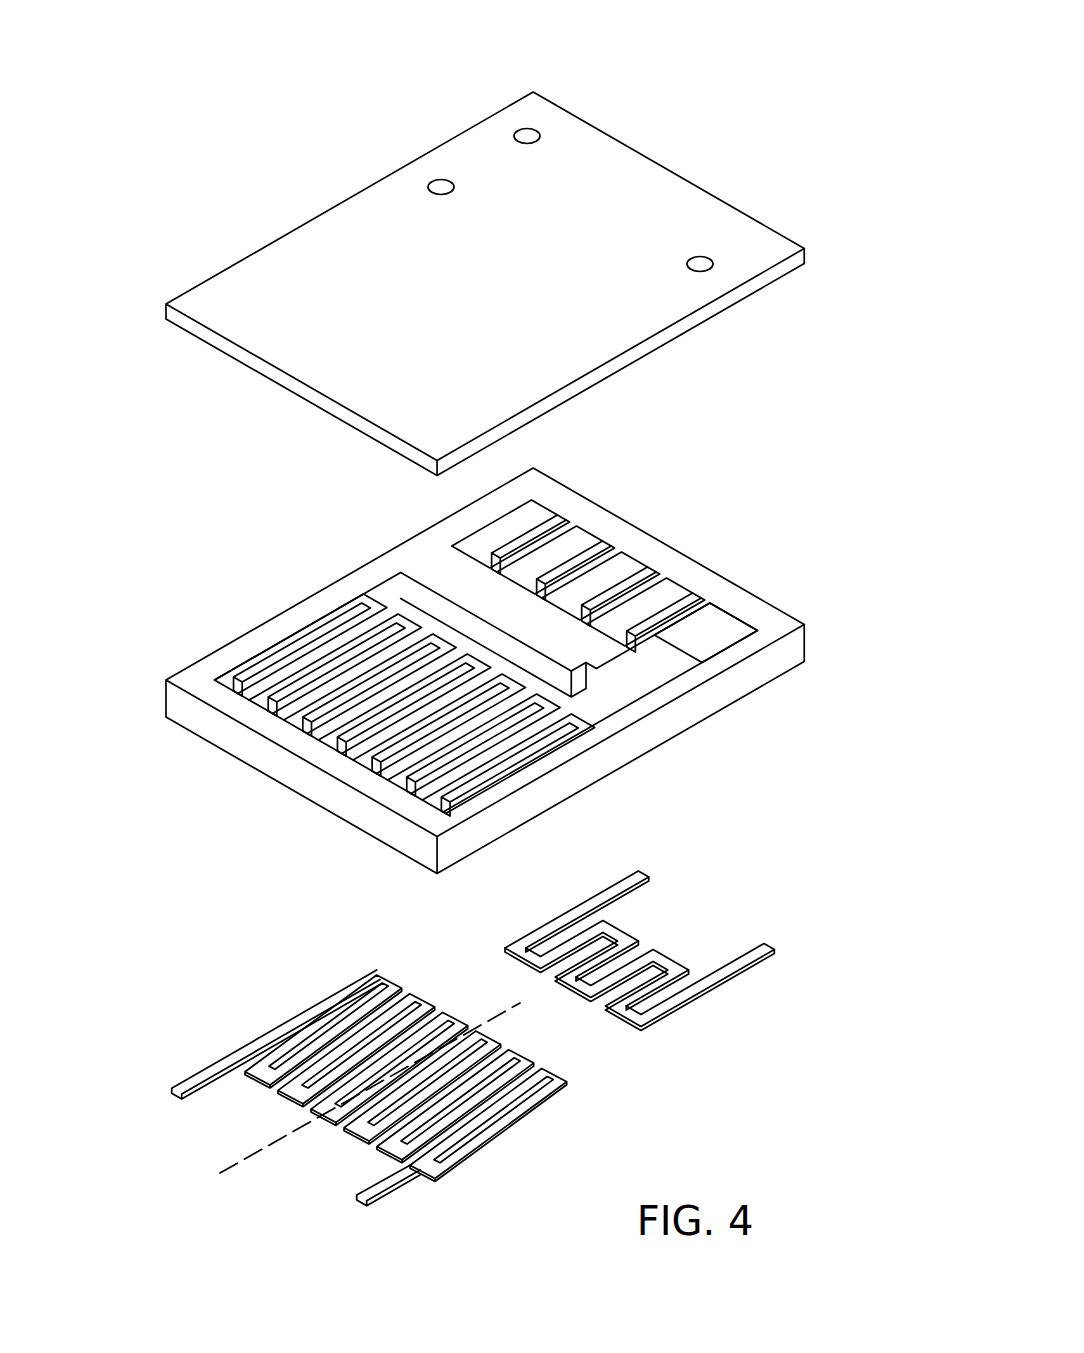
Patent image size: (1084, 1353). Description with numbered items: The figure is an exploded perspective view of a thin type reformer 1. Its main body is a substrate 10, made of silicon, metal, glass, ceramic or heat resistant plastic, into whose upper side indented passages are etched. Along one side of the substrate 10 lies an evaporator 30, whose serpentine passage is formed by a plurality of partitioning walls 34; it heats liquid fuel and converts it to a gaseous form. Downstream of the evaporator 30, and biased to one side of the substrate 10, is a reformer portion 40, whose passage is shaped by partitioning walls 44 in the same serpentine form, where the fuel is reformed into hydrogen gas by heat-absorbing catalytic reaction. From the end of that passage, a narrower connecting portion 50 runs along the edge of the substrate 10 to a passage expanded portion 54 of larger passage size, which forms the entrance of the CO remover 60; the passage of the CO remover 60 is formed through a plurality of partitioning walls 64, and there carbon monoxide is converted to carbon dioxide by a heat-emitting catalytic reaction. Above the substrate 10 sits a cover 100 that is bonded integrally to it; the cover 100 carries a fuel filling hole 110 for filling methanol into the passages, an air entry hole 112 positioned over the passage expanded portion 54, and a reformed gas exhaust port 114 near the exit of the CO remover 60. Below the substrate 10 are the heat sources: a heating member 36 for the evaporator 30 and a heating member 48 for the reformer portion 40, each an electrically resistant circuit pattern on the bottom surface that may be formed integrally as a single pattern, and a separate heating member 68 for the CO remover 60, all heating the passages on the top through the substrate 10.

The thin type reformer 1 is at (772, 438).
The substrate 10 is at (720, 690).
The evaporator 30 is at (220, 680).
The partitioning walls 34 is at (283, 665).
The heating member 36 is at (233, 1043).
The reformer portion 40 is at (393, 778).
The partitioning walls 44 is at (500, 765).
The heating member 48 is at (434, 1178).
The connecting portion 50 is at (590, 735).
The passage expanded portion 54 is at (738, 622).
The CO remover 60 is at (666, 592).
The partitioning walls 64 is at (646, 577).
The heating member 68 is at (720, 970).
The cover 100 is at (309, 272).
The fuel filling hole 110 is at (441, 179).
The air entry hole 112 is at (702, 256).
The reformed gas exhaust port 114 is at (527, 128).